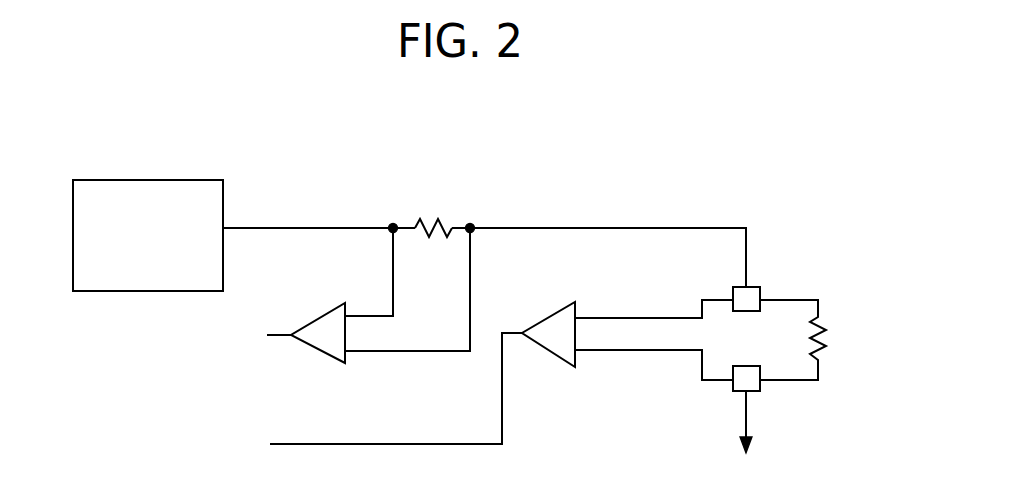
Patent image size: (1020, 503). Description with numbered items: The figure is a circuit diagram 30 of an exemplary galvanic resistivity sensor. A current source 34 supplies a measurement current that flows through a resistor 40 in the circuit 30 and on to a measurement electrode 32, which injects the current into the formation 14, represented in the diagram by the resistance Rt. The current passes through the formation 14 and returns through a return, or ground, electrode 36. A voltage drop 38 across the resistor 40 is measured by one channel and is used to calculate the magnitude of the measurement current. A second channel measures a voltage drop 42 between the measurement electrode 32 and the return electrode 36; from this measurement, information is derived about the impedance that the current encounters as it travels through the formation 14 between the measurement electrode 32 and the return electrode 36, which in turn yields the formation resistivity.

The formation 14 is at (848, 308).
The circuit diagram 30 is at (615, 195).
The measurement electrode 32 is at (733, 288).
The current source 34 is at (105, 179).
The return electrode 36 is at (760, 391).
The voltage drop 38 is at (198, 336).
The resistor 40 is at (438, 218).
The voltage drop 42 is at (200, 445).